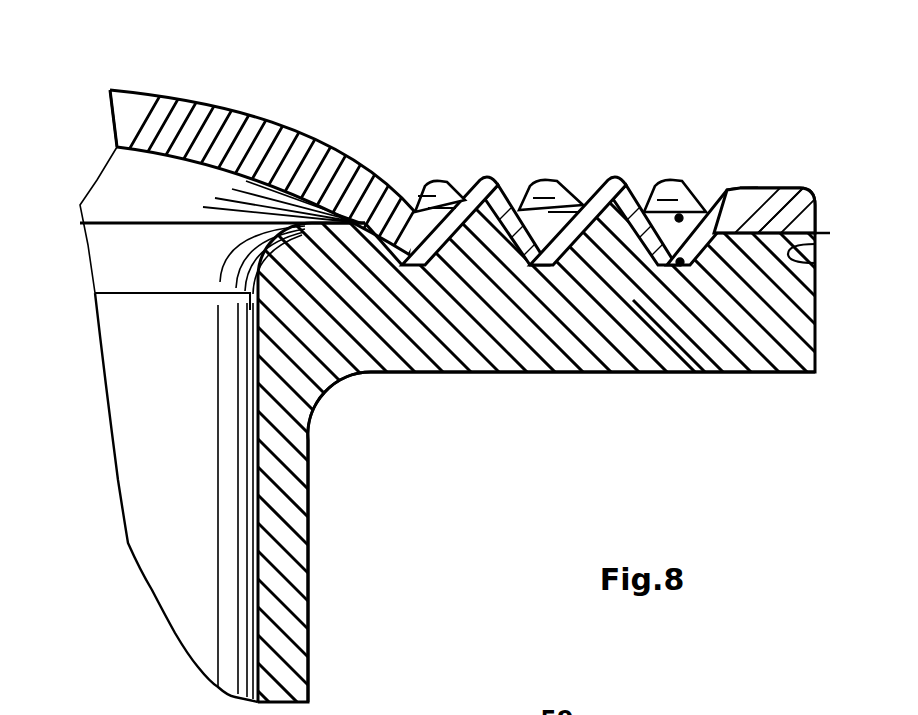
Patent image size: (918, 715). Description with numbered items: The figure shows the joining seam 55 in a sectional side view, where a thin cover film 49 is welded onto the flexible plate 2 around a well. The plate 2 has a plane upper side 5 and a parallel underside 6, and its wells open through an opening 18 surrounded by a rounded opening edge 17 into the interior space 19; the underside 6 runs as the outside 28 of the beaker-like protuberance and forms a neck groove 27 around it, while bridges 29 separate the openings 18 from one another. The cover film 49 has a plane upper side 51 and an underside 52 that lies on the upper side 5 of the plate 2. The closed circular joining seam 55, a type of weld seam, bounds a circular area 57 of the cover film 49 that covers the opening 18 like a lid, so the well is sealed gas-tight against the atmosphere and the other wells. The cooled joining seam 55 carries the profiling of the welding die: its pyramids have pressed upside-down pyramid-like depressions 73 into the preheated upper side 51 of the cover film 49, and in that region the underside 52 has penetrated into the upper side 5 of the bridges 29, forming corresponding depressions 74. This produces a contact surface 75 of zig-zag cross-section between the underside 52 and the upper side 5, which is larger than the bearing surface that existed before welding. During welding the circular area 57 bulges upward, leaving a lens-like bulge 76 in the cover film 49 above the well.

The plate 2 is at (805, 330).
The upper side 5 is at (815, 218).
The underside 6 is at (560, 374).
The opening edge 17 is at (280, 232).
The opening 18 is at (174, 248).
The interior space 19 is at (178, 597).
The neck groove 27 is at (342, 392).
The outside 28 is at (312, 545).
The bridges 29 is at (683, 352).
The cover film 49 is at (773, 202).
The upper side 51 is at (758, 180).
The underside 52 is at (815, 258).
The joining seam 55 is at (548, 178).
The circular area 57 is at (120, 120).
The depressions 73 is at (680, 260).
The depressions 74 is at (672, 208).
The contact surface 75 is at (655, 197).
The lens-like bulge 76 is at (139, 90).